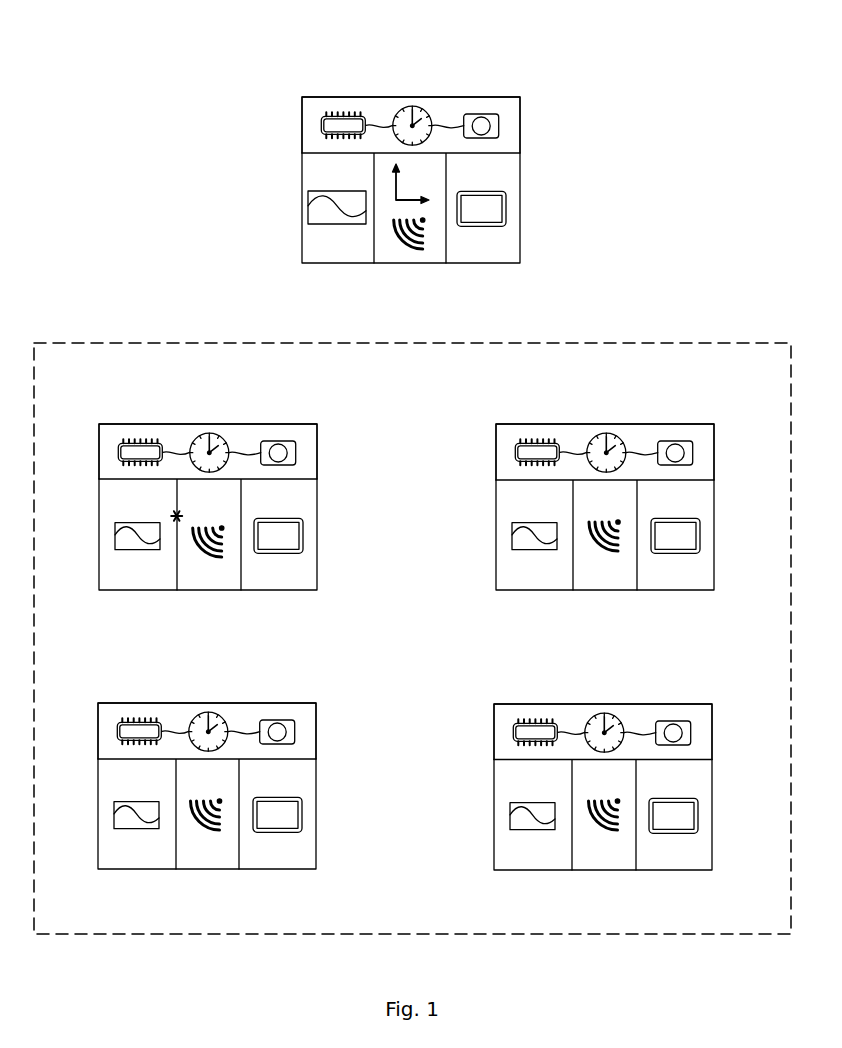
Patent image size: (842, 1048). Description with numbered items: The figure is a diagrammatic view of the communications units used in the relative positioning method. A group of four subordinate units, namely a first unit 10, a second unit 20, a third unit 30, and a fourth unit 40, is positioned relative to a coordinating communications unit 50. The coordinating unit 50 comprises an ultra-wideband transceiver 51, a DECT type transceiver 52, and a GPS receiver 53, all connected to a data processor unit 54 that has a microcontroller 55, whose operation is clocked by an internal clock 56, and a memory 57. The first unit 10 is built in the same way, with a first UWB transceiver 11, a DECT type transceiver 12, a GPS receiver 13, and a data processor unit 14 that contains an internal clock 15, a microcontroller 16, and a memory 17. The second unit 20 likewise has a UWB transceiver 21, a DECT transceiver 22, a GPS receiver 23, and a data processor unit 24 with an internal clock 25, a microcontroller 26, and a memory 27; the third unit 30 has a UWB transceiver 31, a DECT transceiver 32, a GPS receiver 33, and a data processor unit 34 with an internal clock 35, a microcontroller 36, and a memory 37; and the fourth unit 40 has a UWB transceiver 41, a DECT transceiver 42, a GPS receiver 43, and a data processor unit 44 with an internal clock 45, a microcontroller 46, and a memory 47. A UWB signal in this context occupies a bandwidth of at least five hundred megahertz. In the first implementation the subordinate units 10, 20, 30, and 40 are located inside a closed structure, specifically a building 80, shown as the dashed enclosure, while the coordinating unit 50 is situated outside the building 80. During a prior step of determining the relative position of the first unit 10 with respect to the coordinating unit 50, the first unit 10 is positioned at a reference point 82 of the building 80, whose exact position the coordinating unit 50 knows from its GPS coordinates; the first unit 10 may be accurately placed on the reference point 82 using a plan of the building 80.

The first unit 10 is at (335, 456).
The first UWB transceiver 11 is at (135, 550).
The DECT type transceiver 12 is at (208, 552).
The GPS receiver 13 is at (274, 547).
The data processor unit 14 is at (117, 423).
The internal clock 15 is at (199, 438).
The microcontroller 16 is at (152, 445).
The memory 17 is at (279, 444).
The second unit 20 is at (483, 517).
The UWB transceiver 21 is at (532, 550).
The DECT transceiver 22 is at (604, 546).
The GPS receiver 23 is at (671, 547).
The data processor unit 24 is at (514, 423).
The internal clock 25 is at (596, 438).
The microcontroller 26 is at (549, 445).
The memory 27 is at (676, 444).
The third unit 30 is at (335, 735).
The UWB transceiver 31 is at (134, 829).
The DECT transceiver 32 is at (206, 825).
The GPS receiver 33 is at (273, 826).
The data processor unit 34 is at (116, 702).
The internal clock 35 is at (198, 717).
The microcontroller 36 is at (151, 724).
The memory 37 is at (278, 723).
The fourth unit 40 is at (483, 795).
The UWB transceiver 41 is at (530, 830).
The DECT transceiver 42 is at (604, 825).
The GPS receiver 43 is at (669, 827).
The data processor unit 44 is at (512, 703).
The internal clock 45 is at (594, 718).
The microcontroller 46 is at (547, 725).
The memory 47 is at (674, 724).
The coordinating communications unit 50 is at (552, 130).
The ultra-wideband transceiver 51 is at (334, 224).
The DECT type transceiver 52 is at (409, 244).
The GPS receiver 53 is at (477, 220).
The data processor unit 54 is at (320, 96).
The microcontroller 55 is at (355, 118).
The internal clock 56 is at (402, 111).
The memory 57 is at (482, 117).
The building 80 is at (662, 936).
The reference point 82 is at (172, 513).